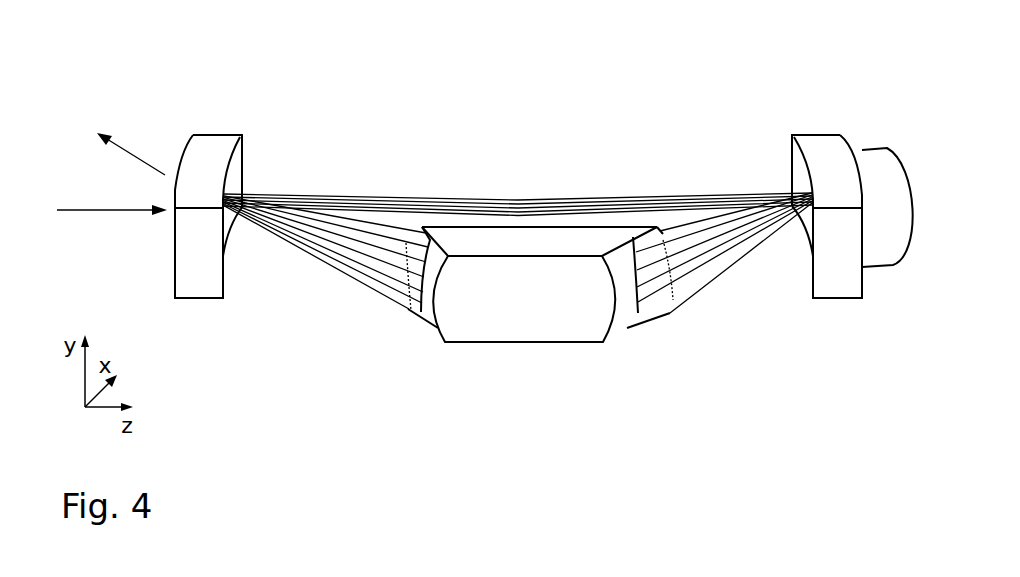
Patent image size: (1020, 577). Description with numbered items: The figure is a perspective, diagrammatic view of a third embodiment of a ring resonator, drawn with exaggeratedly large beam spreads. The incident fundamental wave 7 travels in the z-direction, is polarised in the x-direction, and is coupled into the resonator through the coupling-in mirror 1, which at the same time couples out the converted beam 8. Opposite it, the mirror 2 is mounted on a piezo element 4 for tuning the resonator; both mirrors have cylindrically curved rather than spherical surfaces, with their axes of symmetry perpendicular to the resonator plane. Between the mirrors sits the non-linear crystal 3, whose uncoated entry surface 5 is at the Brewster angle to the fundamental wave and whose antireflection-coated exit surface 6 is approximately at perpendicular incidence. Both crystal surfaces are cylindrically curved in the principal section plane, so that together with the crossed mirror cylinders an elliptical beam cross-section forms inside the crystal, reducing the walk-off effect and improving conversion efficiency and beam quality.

The coupling-in mirror 1 is at (210, 150).
The mirror 2 is at (822, 150).
The non-linear crystal 3 is at (517, 318).
The piezo element 4 is at (872, 163).
The entry surface 5 is at (624, 318).
The exit surface 6 is at (430, 322).
The incident fundamental wave 7 is at (97, 208).
The converted beam 8 is at (138, 157).